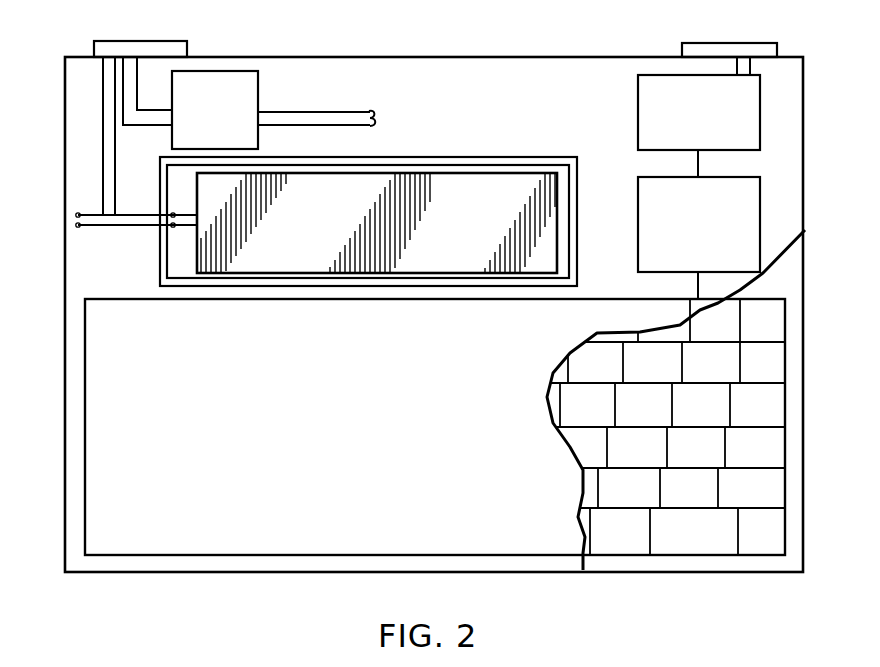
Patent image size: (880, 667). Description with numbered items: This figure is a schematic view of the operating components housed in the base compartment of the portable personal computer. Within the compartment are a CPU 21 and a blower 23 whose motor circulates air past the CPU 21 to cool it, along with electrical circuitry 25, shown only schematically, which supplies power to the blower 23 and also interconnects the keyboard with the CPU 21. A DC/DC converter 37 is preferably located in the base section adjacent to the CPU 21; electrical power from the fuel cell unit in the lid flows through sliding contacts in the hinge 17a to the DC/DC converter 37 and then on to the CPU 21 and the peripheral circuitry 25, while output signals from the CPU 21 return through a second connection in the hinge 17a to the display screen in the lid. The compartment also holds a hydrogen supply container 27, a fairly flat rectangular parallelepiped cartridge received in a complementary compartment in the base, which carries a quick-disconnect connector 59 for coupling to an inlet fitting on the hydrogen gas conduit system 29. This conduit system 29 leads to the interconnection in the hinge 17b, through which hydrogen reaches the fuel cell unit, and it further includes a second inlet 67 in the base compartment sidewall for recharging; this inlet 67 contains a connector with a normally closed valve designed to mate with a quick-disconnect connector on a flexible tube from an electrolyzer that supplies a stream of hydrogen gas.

The hinge 17a is at (167, 41).
The hinge 17b is at (750, 43).
The CPU 21 is at (278, 442).
The blower 23 is at (227, 120).
The electrical circuitry 25 is at (752, 215).
The hydrogen supply container 27 is at (478, 226).
The hydrogen gas conduit system 29 is at (108, 147).
The DC/DC converter 37 is at (653, 78).
The quick-disconnect connector 59 is at (188, 218).
The second inlet 67 is at (73, 216).